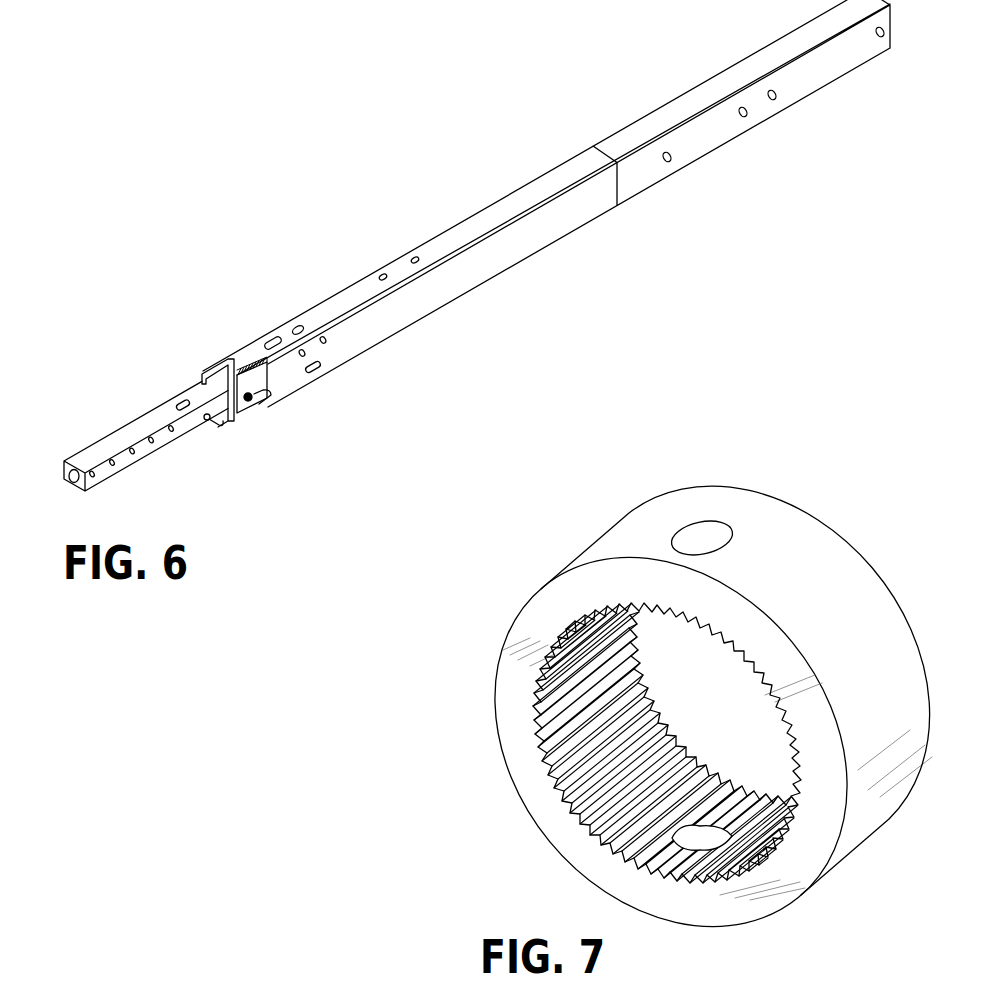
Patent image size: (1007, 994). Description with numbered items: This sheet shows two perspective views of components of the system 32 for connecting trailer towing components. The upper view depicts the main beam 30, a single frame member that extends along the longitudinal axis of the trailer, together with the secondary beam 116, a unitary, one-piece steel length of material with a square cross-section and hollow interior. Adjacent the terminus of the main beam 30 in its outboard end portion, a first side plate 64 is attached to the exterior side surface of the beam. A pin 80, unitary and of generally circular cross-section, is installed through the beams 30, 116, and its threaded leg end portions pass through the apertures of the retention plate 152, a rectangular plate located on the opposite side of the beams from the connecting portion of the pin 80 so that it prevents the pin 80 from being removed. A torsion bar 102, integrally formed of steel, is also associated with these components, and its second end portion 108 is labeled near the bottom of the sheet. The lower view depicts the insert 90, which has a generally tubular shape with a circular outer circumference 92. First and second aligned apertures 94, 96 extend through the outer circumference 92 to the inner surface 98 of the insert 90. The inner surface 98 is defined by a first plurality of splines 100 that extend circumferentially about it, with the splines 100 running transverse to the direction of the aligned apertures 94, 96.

In FIG. 6, the main beam 30 is at (538, 185).
In FIG. 6, the system for connecting trailer towing components 32 is at (207, 310).
In FIG. 6, the first side plate 64 is at (273, 381).
In FIG. 6, the pin 80 is at (243, 420).
In FIG. 6, the torsion bar 102 is at (253, 400).
In FIG. 6, the secondary beam 116 is at (115, 432).
In FIG. 6, the retention plate 152 is at (197, 385).
In FIG. 7, the insert 90 is at (597, 532).
In FIG. 7, the outer circumference 92 is at (838, 563).
In FIG. 7, the first aperture 94 is at (716, 532).
In FIG. 7, the second aperture 96 is at (697, 837).
In FIG. 7, the inner surface 98 is at (587, 788).
In FIG. 7, the first plurality of splines 100 is at (531, 735).
In FIG. 7, the second end portion 108 is at (258, 983).